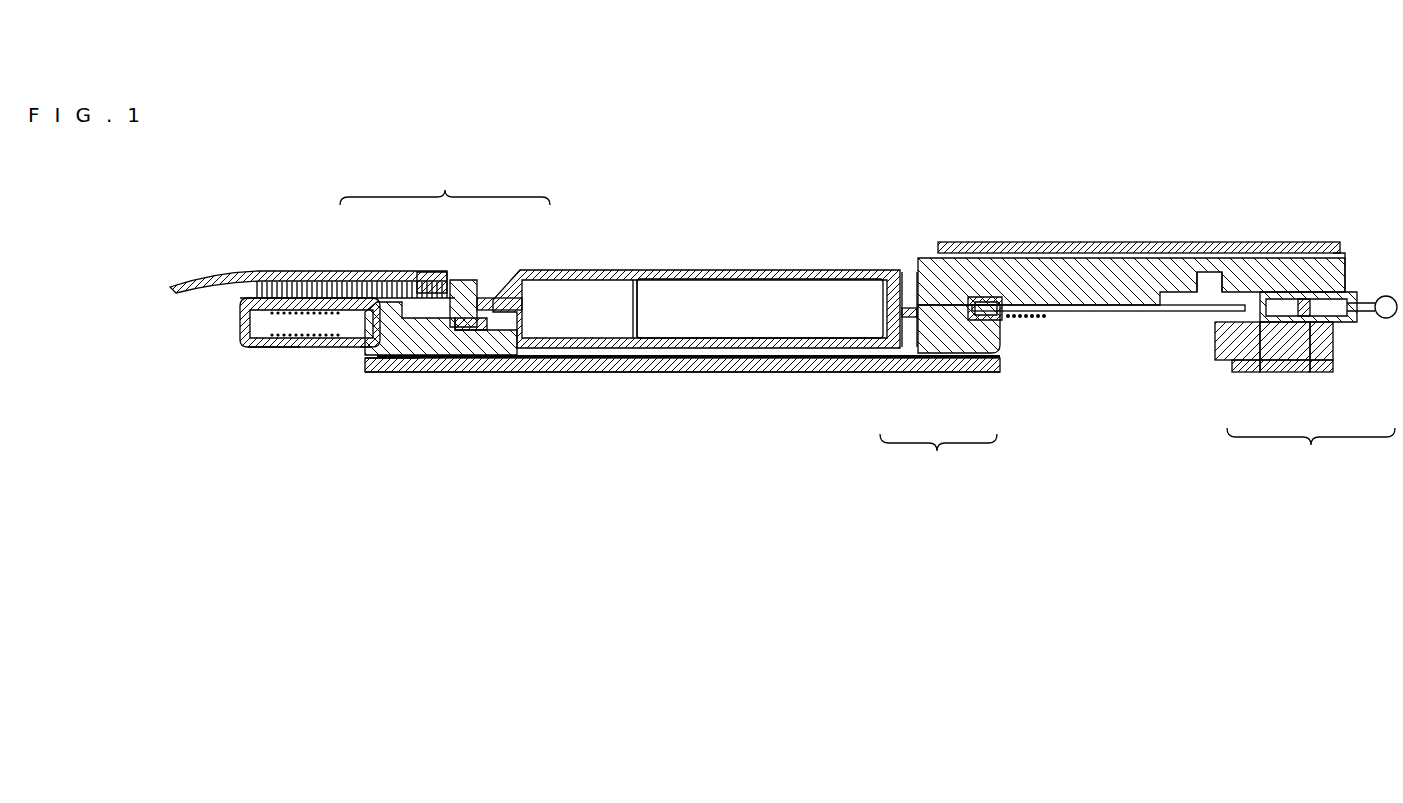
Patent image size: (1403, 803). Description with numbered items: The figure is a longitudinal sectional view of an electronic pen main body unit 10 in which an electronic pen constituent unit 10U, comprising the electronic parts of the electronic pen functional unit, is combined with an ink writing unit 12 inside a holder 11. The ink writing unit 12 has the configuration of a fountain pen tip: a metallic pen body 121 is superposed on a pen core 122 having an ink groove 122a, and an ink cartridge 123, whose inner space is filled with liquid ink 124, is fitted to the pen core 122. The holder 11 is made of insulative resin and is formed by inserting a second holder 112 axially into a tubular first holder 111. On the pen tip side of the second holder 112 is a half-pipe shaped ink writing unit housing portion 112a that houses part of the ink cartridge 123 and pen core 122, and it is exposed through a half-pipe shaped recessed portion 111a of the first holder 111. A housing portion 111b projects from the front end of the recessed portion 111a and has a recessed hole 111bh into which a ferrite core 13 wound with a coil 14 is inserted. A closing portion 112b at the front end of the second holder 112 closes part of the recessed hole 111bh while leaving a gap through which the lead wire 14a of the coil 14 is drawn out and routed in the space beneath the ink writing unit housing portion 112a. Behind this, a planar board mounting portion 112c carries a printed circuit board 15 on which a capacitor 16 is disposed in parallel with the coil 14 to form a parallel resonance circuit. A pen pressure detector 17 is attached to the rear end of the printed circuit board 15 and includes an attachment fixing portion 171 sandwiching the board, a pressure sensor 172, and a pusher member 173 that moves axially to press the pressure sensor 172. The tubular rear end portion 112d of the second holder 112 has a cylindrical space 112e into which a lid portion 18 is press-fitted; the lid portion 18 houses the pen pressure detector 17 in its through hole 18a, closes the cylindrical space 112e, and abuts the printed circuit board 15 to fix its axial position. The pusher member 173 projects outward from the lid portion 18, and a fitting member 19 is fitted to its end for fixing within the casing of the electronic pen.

The electronic pen main body unit 10 is at (853, 212).
The electronic pen constituent unit 10U is at (716, 380).
The holder 11 is at (938, 464).
The first holder 111 is at (898, 360).
The recessed portion 111a is at (392, 360).
The housing portion 111b is at (264, 350).
The recessed hole 111bh is at (353, 348).
The second holder 112 is at (958, 342).
The ink writing unit housing portion 112a is at (911, 300).
The closing portion 112b is at (380, 335).
The board mounting portion 112c is at (1125, 272).
The rear end portion 112d is at (1310, 266).
The cylindrical space 112e is at (1210, 275).
The ink writing unit 12 is at (445, 183).
The pen body 121 is at (343, 270).
The pen core 122 is at (465, 270).
The ink groove 122a is at (373, 308).
The ink cartridge 123 is at (567, 268).
The liquid ink 124 is at (693, 300).
The ferrite core 13 is at (252, 321).
The coil 14 is at (290, 310).
The lead wire 14a is at (374, 360).
The printed circuit board 15 is at (1103, 313).
The capacitor 16 is at (1034, 320).
The pen pressure detector 17 is at (1311, 455).
The attachment fixing portion 171 is at (1250, 362).
The pressure sensor 172 is at (1302, 362).
The pusher member 173 is at (1338, 362).
The lid portion 18 is at (1345, 285).
The through hole 18a is at (1284, 300).
The fitting member 19 is at (1390, 320).